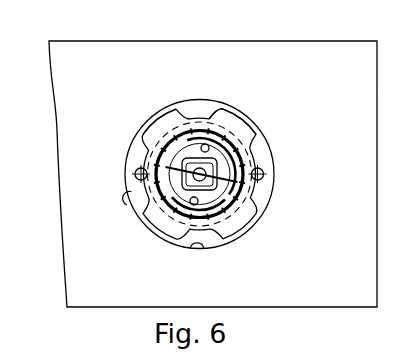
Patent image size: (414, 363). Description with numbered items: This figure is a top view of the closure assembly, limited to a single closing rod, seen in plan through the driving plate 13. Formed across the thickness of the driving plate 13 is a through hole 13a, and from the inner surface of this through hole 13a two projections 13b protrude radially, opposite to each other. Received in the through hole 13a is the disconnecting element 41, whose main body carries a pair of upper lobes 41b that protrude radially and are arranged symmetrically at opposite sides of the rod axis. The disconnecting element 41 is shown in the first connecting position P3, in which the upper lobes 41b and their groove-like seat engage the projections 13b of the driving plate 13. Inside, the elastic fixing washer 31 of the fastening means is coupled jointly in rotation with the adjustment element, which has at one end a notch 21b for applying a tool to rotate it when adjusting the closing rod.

The driving plate 13 is at (242, 52).
The through hole 13a is at (127, 200).
The projections 13b is at (128, 143).
The disconnecting element 41 is at (180, 119).
The upper lobes 41b is at (128, 172).
The elastic fixing washer 31 is at (238, 152).
The first connecting position P3 is at (223, 127).
The notch 21b is at (233, 185).